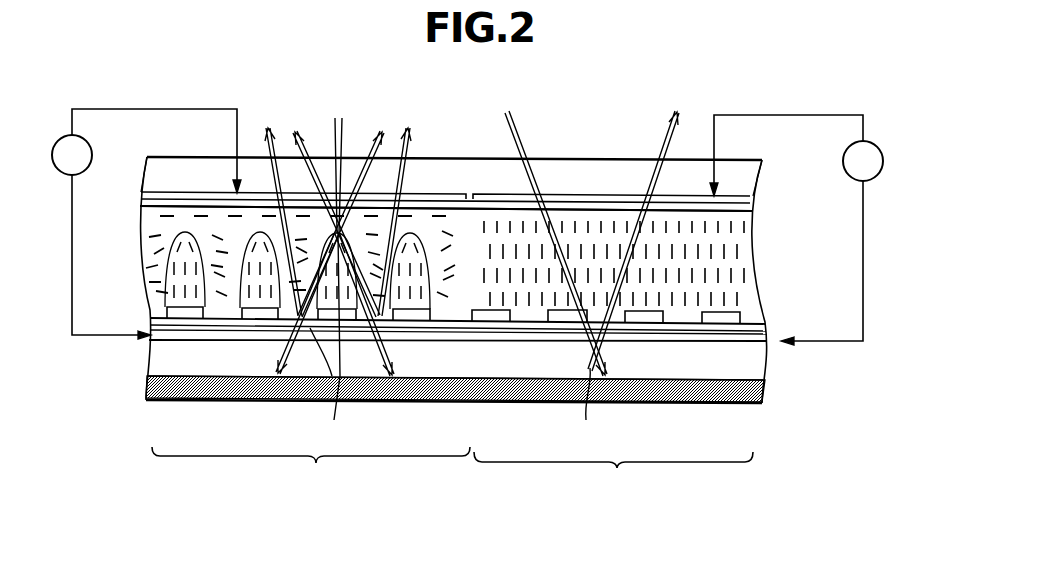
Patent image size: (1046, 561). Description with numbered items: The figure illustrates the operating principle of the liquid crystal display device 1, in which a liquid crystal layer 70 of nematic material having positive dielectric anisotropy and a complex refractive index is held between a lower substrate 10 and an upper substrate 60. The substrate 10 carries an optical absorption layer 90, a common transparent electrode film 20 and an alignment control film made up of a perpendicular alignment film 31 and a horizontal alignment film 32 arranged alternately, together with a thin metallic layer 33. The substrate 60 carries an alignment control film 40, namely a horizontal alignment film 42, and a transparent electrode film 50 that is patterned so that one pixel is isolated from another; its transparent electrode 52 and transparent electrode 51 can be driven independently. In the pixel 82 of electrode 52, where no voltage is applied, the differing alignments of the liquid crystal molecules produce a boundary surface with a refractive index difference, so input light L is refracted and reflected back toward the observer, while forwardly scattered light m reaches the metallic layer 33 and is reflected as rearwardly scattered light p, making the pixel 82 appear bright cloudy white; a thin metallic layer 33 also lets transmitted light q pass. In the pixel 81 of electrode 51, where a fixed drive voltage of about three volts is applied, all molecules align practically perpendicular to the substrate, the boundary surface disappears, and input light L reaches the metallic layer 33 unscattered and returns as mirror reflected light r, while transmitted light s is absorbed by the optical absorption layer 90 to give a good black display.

The liquid crystal display device 1 is at (467, 319).
The substrate 10 is at (750, 368).
The transparent electrode film 20 is at (768, 350).
The perpendicular alignment film 31 is at (489, 321).
The horizontal alignment film 32 is at (526, 328).
The metallic layer 33 is at (490, 375).
The alignment control film 40 is at (727, 209).
The horizontal alignment film 42 is at (495, 219).
The transparent electrode film 50 is at (479, 160).
The transparent electrode 51 is at (587, 195).
The transparent electrode 52 is at (437, 193).
The substrate 60 is at (737, 181).
The liquid crystal layer 70 is at (131, 207).
The pixel 81 is at (613, 475).
The pixel 82 is at (311, 473).
The optical absorption layer 90 is at (762, 402).